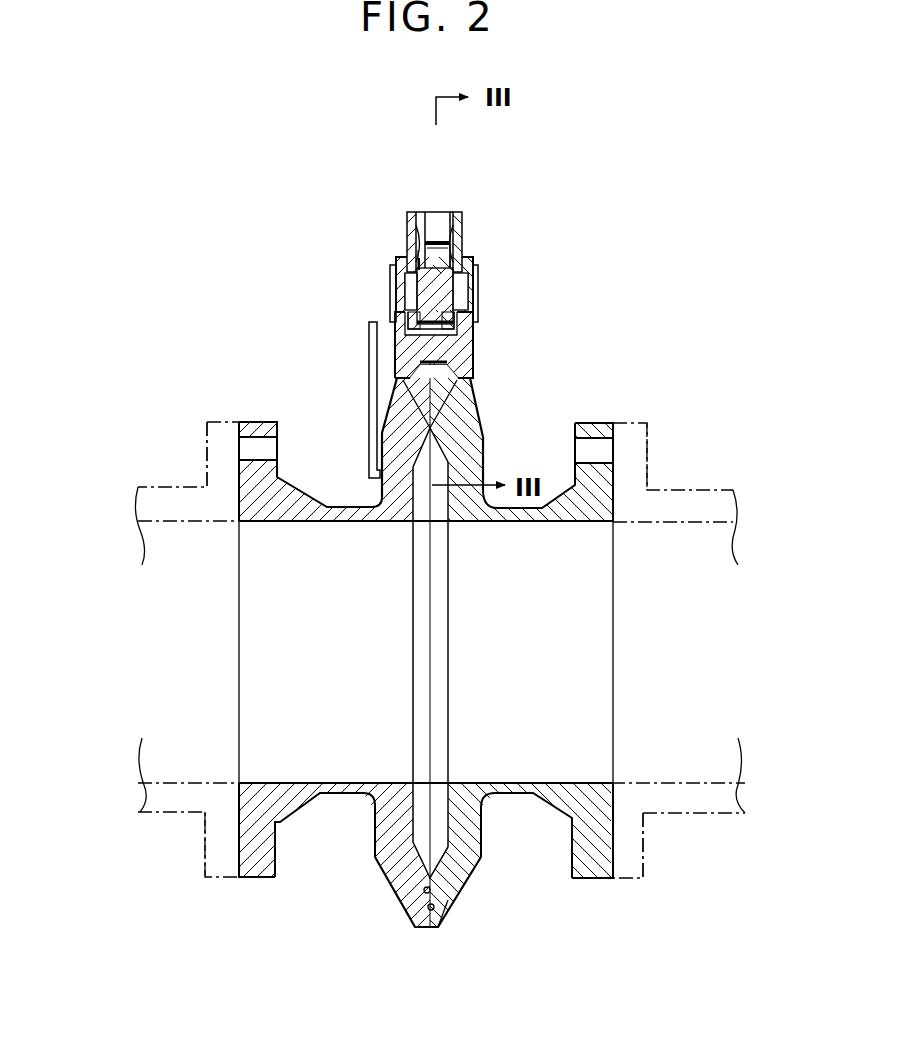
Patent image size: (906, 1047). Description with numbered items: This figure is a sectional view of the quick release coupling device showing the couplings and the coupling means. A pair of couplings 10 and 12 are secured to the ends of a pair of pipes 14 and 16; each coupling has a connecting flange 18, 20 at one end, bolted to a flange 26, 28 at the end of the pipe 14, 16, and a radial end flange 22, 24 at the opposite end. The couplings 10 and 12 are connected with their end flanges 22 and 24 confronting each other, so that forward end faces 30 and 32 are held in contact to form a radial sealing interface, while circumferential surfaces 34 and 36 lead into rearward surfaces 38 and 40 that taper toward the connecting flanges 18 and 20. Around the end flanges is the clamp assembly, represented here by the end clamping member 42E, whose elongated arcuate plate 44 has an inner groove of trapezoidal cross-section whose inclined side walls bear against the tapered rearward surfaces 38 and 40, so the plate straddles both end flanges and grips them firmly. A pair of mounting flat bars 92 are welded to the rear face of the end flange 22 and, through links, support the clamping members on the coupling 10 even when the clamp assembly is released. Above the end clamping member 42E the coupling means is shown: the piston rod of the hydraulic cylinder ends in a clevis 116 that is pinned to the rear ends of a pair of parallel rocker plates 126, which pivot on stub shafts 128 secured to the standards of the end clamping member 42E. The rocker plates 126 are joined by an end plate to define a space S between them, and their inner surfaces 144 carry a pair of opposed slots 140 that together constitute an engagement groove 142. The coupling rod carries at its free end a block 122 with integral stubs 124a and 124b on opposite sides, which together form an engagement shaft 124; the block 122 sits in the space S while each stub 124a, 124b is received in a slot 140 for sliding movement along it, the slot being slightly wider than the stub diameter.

The coupling 10 is at (308, 870).
The coupling 12 is at (537, 890).
The pipe 14 is at (147, 820).
The pipe 16 is at (708, 822).
The connecting flange 18 is at (252, 880).
The connecting flange 20 is at (590, 880).
The radial end flange 22 is at (392, 399).
The radial end flange 24 is at (478, 404).
The flange 26 is at (205, 880).
The flange 28 is at (643, 880).
The forward end face 30 is at (417, 923).
The forward end face 32 is at (436, 902).
The circumferential surface 34 is at (424, 930).
The circumferential surface 36 is at (433, 933).
The rearward surface 38 is at (403, 912).
The rearward surface 40 is at (441, 927).
The end clamping member 42E is at (480, 341).
The arcuate plate 44 is at (474, 360).
The mounting flat bar 92 is at (368, 398).
The clevis 116 is at (436, 222).
The block 122 is at (438, 253).
The engagement shaft 124 is at (454, 278).
The stub 124a is at (411, 287).
The stub 124b is at (466, 285).
The rocker plate 126 is at (407, 237).
The stub shaft 128 is at (393, 300).
The slot 140 is at (418, 236).
The engagement groove 142 is at (414, 210).
The inner surface 144 is at (412, 332).
The space S is at (458, 253).